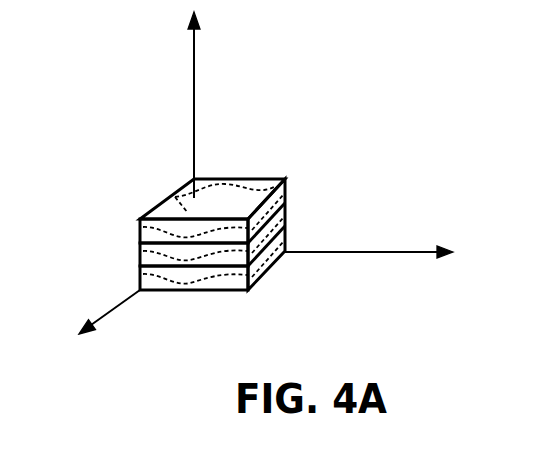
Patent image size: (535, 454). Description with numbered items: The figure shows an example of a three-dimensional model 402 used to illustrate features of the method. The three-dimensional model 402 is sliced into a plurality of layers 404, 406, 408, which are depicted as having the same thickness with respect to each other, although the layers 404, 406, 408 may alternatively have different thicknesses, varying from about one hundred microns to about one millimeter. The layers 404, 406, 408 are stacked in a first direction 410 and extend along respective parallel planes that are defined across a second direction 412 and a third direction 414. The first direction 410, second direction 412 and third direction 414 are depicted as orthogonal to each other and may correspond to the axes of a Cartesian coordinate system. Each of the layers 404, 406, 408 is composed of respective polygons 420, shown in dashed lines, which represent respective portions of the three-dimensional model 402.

The 3D model 402 is at (263, 273).
The layer 404 is at (234, 291).
The layer 406 is at (140, 261).
The layer 408 is at (140, 237).
The first direction 410 is at (215, 105).
The second direction 412 is at (369, 270).
The third direction 414 is at (94, 326).
The polygons 420 is at (226, 186).